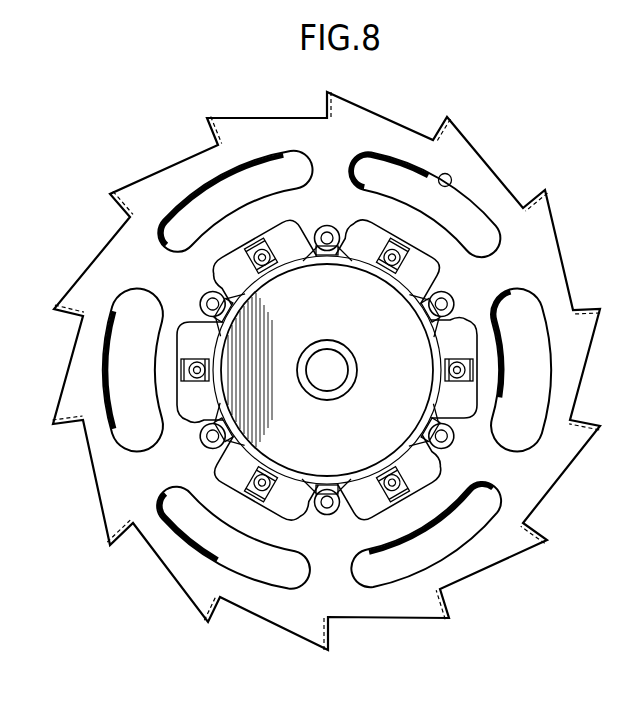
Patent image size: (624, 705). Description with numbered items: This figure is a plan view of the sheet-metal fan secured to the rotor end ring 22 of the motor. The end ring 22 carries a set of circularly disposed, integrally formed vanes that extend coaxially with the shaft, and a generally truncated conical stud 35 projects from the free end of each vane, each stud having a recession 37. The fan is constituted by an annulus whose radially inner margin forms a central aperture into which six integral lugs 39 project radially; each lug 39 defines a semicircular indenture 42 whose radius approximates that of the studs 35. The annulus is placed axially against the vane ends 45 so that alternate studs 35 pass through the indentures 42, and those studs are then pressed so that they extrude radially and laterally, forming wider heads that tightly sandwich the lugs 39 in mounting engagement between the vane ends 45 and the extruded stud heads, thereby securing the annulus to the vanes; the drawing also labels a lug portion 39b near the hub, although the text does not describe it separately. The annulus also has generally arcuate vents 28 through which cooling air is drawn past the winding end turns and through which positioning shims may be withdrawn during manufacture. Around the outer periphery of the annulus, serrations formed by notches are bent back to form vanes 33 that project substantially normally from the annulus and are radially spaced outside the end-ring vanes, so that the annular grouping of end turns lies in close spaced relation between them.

The rotor end ring 22 is at (200, 338).
The vent 28 is at (452, 184).
The vane 33 is at (548, 207).
The stud 35 is at (208, 368).
The recession 37 is at (207, 373).
The lug 39 is at (312, 500).
The hub disc 39b is at (314, 300).
The semicircular indenture 42 is at (214, 297).
The vane end 45 is at (472, 380).